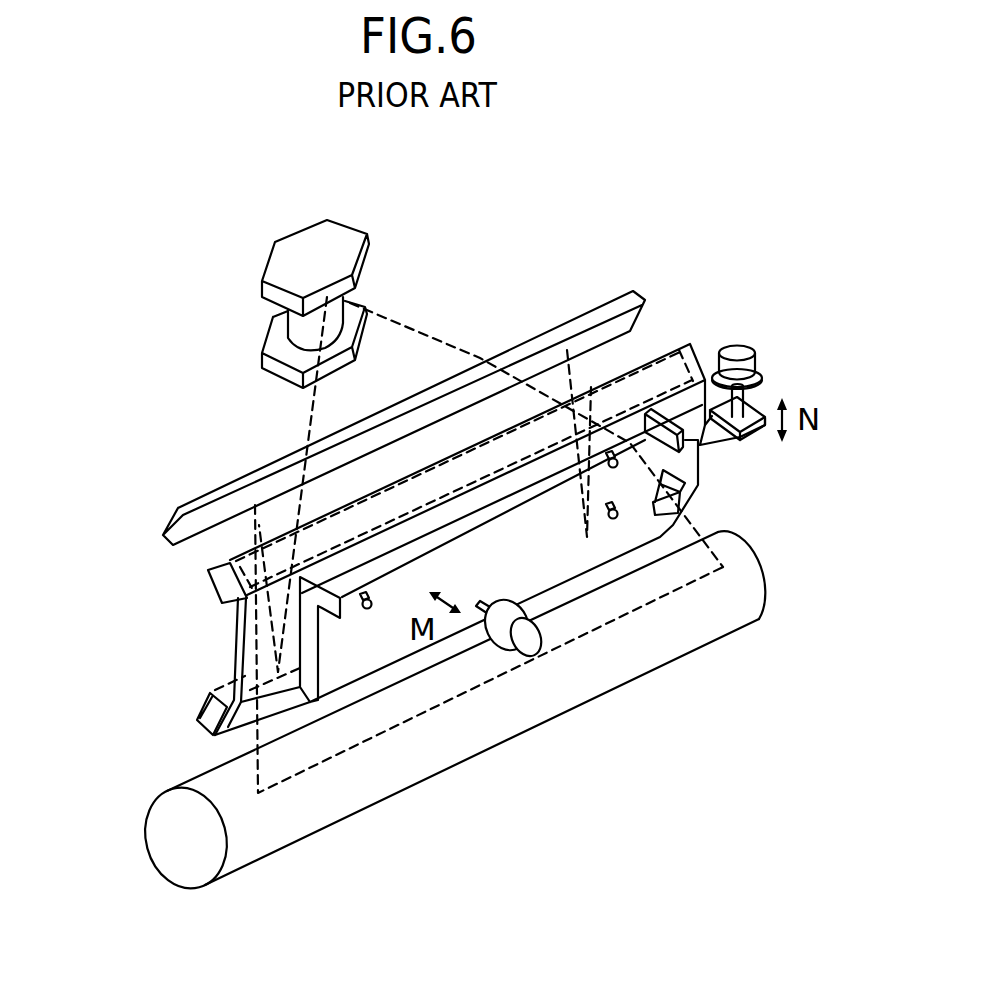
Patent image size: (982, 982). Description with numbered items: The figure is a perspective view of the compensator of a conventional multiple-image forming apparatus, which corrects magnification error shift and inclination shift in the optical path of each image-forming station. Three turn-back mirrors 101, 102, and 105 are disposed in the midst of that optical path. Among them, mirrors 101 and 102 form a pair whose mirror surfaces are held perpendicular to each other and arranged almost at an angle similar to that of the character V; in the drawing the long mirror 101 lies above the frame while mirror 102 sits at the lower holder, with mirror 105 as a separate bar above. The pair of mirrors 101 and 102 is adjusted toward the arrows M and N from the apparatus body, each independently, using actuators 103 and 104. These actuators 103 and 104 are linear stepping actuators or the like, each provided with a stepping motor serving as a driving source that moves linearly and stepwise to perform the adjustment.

The turn-back mirror 101 is at (207, 598).
The turn-back mirror 102 is at (198, 714).
The actuator 103 is at (538, 648).
The actuator 104 is at (757, 350).
The turn-back mirror 105 is at (165, 535).